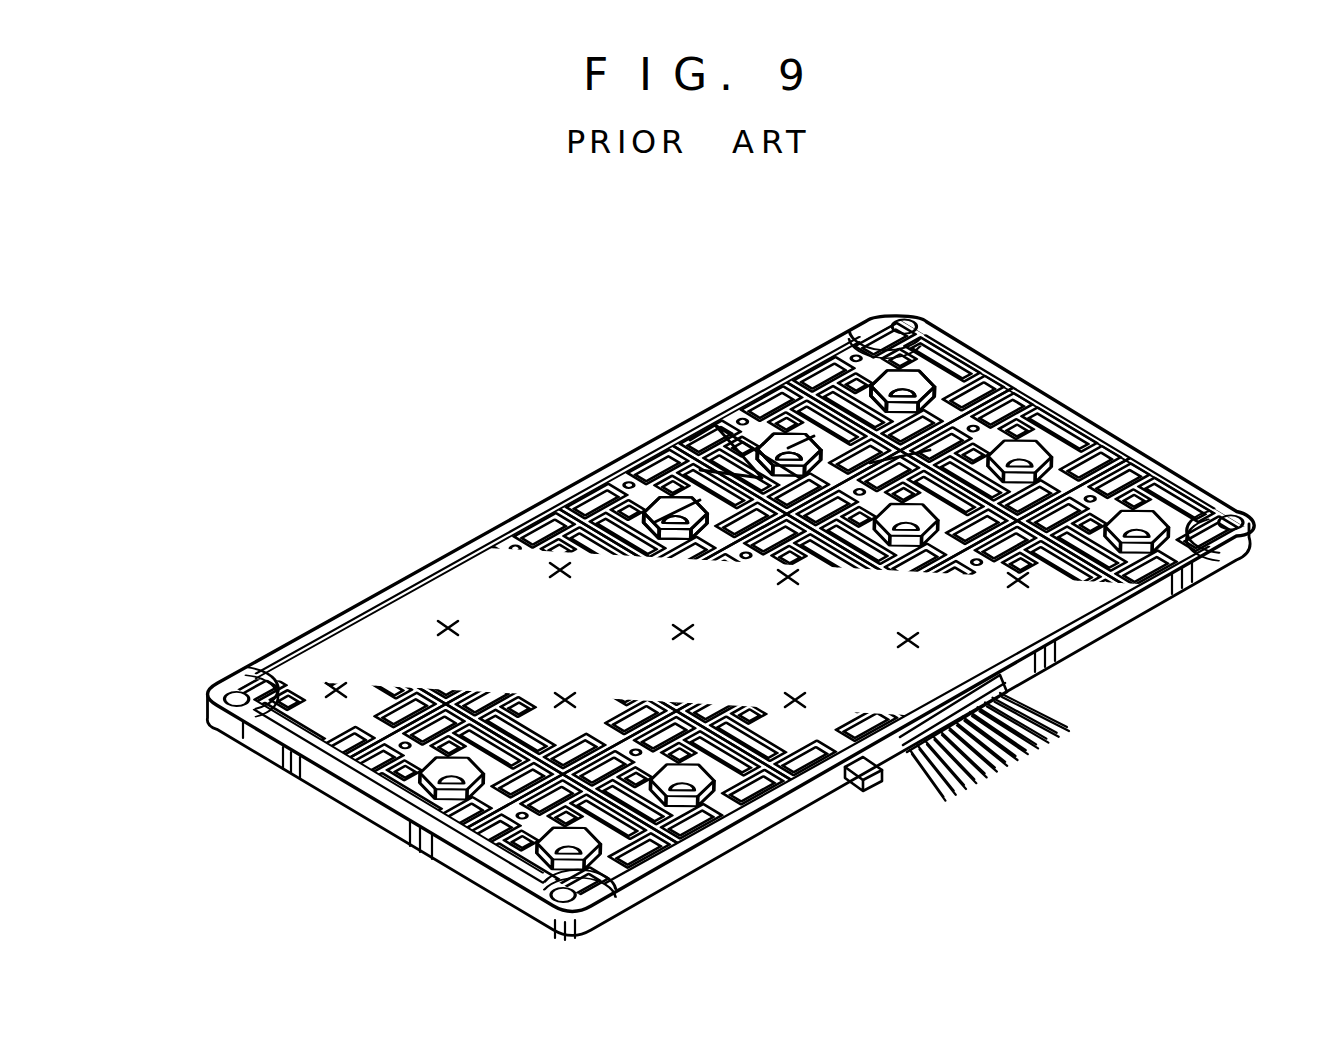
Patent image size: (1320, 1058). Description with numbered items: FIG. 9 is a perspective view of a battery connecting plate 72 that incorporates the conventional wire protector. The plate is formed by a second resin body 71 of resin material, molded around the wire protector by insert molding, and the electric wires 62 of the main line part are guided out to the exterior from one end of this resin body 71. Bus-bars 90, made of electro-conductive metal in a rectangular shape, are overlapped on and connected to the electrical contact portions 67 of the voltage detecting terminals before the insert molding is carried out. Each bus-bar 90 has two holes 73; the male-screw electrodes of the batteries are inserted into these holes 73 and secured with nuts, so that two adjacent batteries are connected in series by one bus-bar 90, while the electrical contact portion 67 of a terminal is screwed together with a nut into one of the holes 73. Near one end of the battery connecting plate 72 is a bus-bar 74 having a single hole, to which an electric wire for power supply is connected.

The battery connecting plate 72 is at (516, 484).
The second resin body 71 is at (386, 634).
The bus-bar 90 is at (657, 492).
The hole 73 is at (800, 443).
The electrical contact portion 67 is at (790, 448).
The bus-bar having a single hole 74 is at (915, 380).
The electric wire 62 is at (1037, 708).